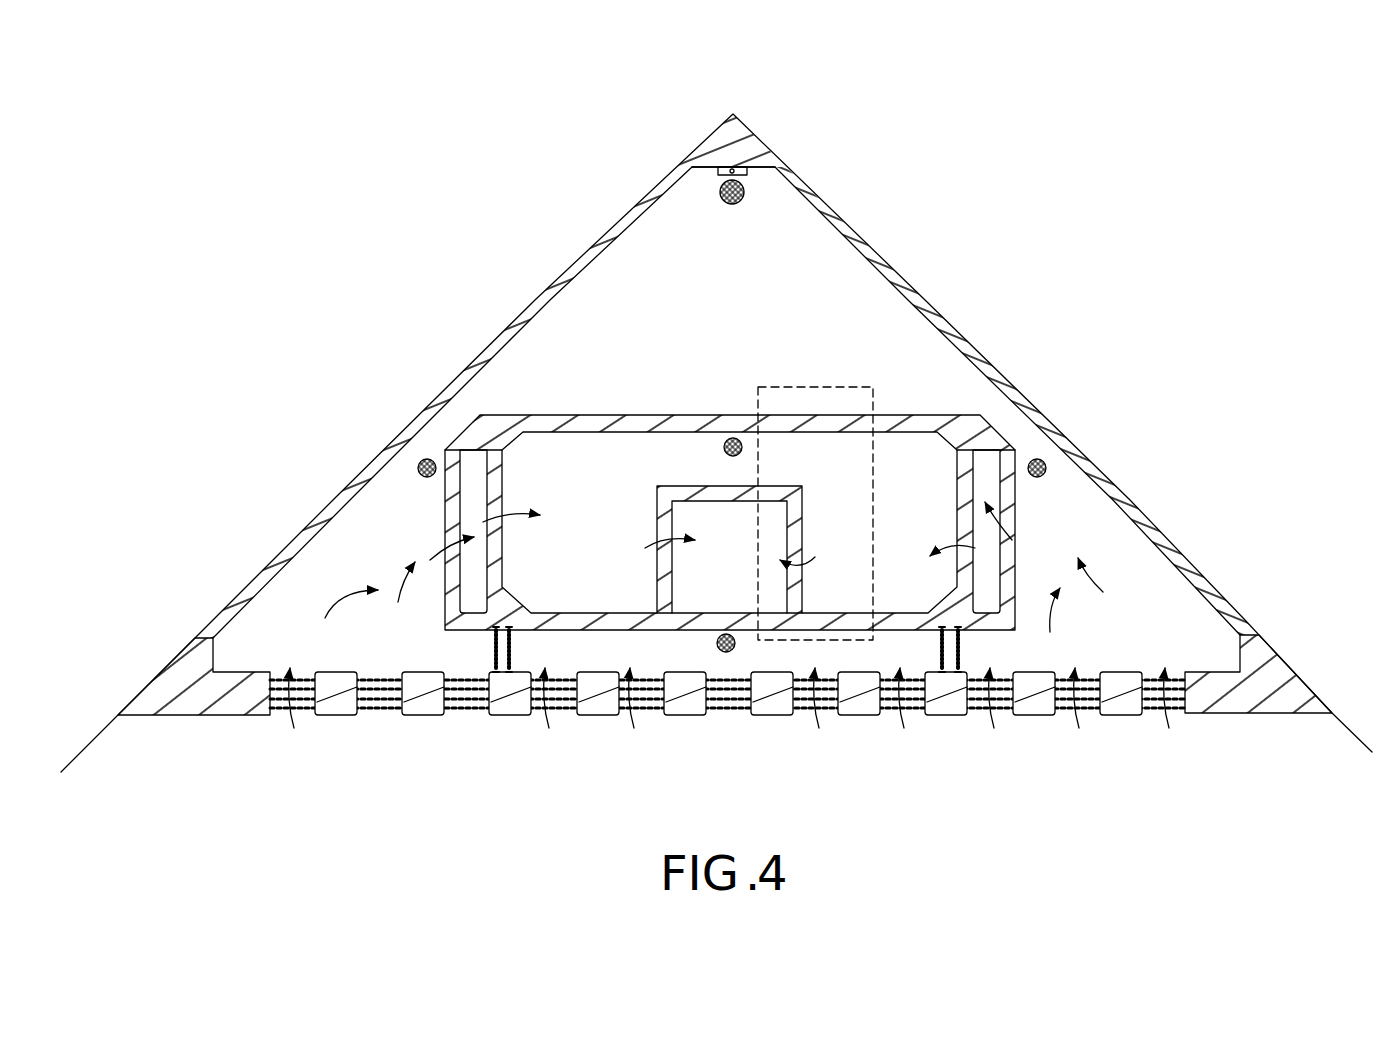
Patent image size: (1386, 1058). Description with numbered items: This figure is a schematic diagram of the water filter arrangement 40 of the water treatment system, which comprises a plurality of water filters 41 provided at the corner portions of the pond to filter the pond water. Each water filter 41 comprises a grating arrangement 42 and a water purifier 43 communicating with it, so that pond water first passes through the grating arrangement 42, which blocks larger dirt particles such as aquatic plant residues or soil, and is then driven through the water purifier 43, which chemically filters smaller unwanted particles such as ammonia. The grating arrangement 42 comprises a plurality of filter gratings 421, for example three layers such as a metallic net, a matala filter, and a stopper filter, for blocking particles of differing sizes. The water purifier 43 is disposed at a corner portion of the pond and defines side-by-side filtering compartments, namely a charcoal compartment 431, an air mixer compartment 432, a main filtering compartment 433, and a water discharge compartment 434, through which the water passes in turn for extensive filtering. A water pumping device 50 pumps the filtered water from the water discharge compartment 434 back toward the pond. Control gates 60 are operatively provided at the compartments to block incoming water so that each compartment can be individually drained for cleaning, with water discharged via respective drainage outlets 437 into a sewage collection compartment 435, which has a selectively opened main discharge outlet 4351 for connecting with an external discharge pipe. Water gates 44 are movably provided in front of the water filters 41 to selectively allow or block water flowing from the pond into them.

The water filter arrangement 40 is at (242, 740).
The water filter 41 is at (1027, 362).
The grating arrangement 42 is at (996, 732).
The filter grating 421 is at (466, 712).
The water purifier 43 is at (1153, 580).
The charcoal compartment 431 is at (337, 567).
The air mixer compartment 432 is at (476, 482).
The main filtering compartment 433 is at (577, 447).
The water discharge compartment 434 is at (738, 527).
The sewage collection compartment 435 is at (777, 237).
The main discharge outlet 4351 is at (720, 187).
The drainage outlet 437 is at (732, 438).
The water gate 44 is at (1165, 672).
The water pumping device 50 is at (853, 400).
The control gate 60 is at (493, 643).